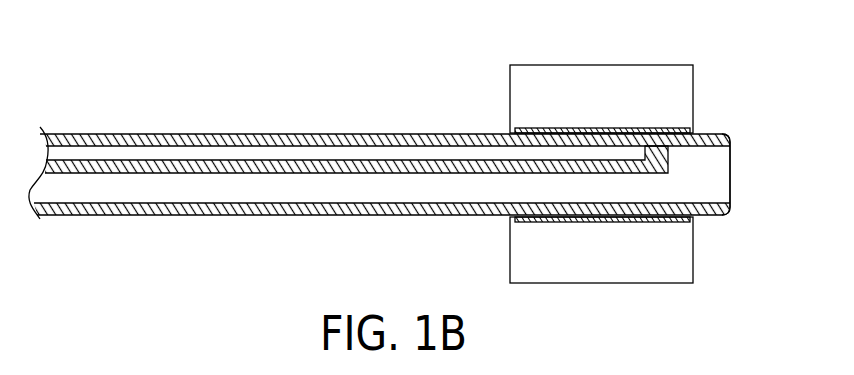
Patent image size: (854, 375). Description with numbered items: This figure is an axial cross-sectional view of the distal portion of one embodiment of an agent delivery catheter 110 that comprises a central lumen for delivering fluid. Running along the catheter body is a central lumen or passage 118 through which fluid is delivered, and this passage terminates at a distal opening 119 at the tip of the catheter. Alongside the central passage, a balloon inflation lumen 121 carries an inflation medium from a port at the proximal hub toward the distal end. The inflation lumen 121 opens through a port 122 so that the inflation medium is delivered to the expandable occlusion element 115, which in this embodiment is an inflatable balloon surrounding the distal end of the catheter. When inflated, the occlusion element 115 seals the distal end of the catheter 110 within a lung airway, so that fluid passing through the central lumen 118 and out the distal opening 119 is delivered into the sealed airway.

The delivery catheter 110 is at (298, 64).
The inflation lumen 121 is at (150, 132).
The central lumen 118 is at (91, 192).
The distal opening 119 is at (722, 183).
The occlusion element 115 is at (662, 130).
The port 122 is at (598, 130).